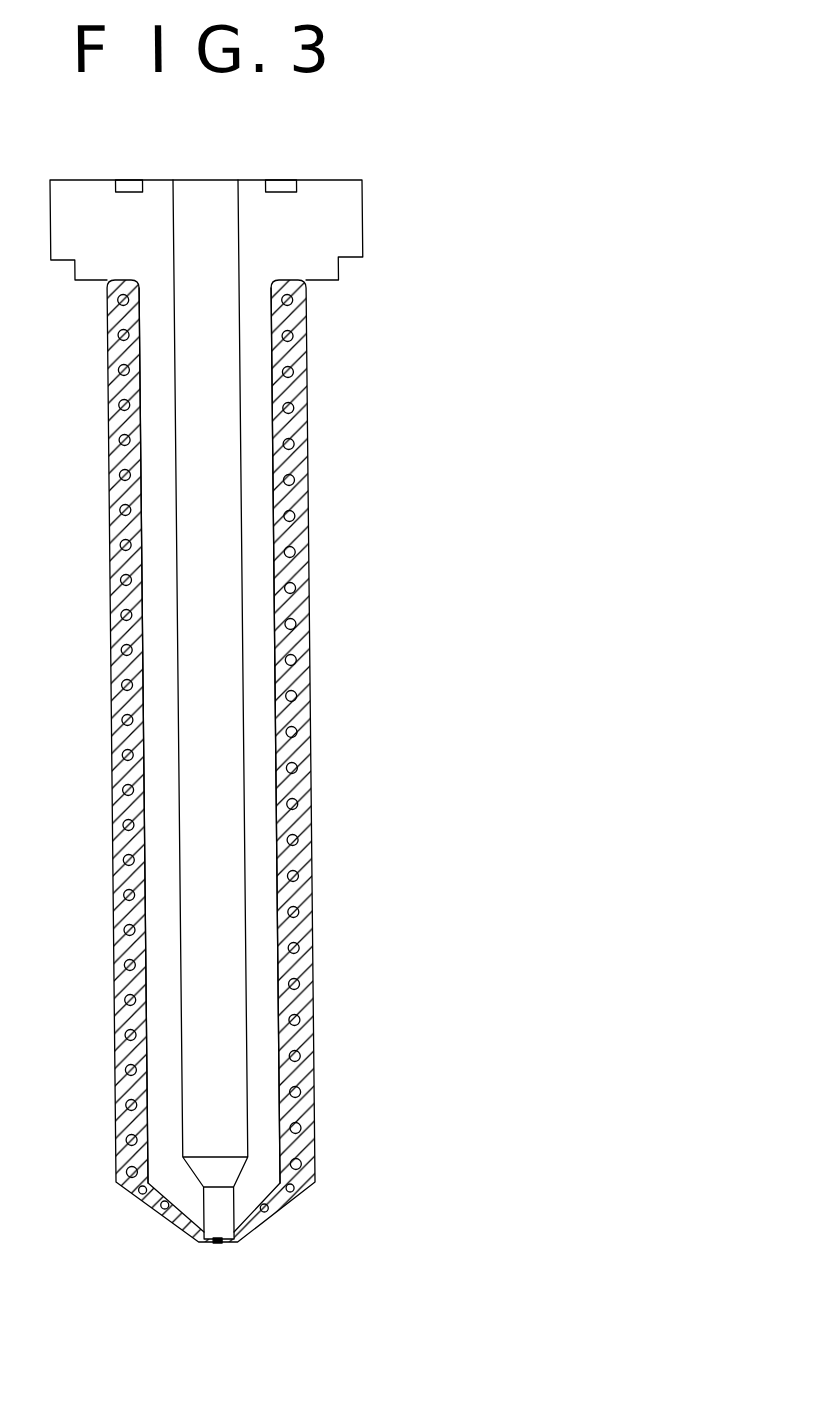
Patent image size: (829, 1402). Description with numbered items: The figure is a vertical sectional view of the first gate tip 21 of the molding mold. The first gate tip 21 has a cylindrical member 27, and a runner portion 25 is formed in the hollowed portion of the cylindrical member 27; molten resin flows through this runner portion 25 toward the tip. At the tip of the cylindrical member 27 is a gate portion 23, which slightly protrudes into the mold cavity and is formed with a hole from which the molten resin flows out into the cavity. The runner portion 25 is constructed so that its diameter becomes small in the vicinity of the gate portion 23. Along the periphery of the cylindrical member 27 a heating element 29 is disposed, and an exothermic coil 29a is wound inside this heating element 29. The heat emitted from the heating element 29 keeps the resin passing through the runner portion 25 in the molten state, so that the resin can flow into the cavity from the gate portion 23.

The first gate tip 21 is at (366, 228).
The gate portion 23 is at (209, 1246).
The runner portion 25 is at (223, 873).
The cylindrical member 27 is at (259, 648).
The heating element 29 is at (303, 752).
The exothermic coil 29a is at (294, 557).